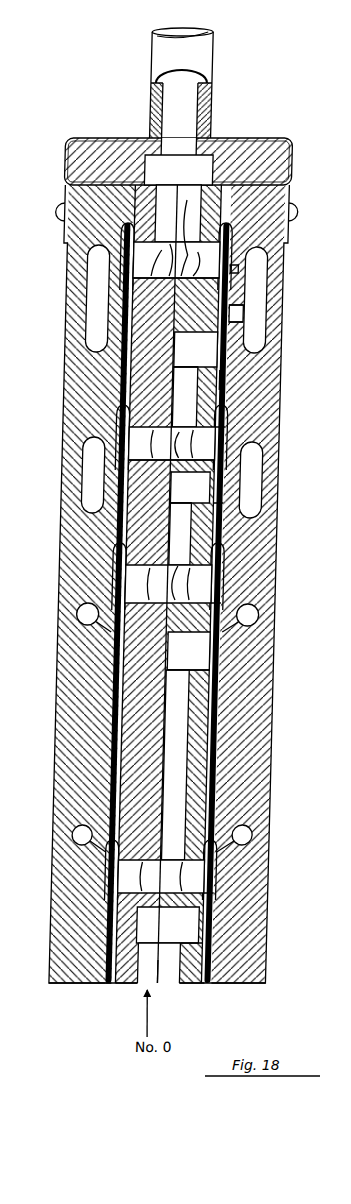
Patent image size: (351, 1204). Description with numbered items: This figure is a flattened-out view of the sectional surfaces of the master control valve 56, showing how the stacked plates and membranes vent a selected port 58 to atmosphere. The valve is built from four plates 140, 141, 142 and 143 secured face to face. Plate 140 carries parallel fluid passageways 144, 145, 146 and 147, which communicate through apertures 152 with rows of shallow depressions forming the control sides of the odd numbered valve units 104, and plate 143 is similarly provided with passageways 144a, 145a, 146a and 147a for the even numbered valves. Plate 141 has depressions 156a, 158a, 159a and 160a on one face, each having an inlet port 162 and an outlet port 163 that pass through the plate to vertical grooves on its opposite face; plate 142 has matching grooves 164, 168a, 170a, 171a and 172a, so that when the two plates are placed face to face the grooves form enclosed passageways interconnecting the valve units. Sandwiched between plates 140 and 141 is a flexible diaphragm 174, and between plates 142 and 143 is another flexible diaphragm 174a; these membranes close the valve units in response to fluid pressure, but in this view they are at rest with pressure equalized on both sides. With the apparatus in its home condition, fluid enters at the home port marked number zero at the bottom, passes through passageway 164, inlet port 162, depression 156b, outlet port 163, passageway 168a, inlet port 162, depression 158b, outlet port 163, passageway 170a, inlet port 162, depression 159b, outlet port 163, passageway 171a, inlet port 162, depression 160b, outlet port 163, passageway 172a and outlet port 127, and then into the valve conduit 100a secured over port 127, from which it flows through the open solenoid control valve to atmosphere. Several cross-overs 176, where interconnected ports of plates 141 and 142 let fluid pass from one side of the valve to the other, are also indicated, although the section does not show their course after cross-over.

The valve assembly 56 is at (124, 103).
The valve conduit 100a is at (202, 70).
The outlet port 127 is at (204, 178).
The valve unit 104 is at (246, 229).
The groove 172a is at (207, 262).
The inlet port 162 is at (216, 342).
The cross-over 176 is at (172, 265).
The fluid passageway 147 is at (96, 348).
The passageway 147a is at (267, 350).
The fluid passageway 146 is at (96, 502).
The passageway 146a is at (271, 508).
The fluid passageway 145 is at (93, 612).
The passageway 145a is at (272, 618).
The fluid passageway 144 is at (94, 838).
The passageway 144a is at (274, 837).
The outlet port 163 is at (215, 262).
The depression 160a is at (237, 279).
The depression 160b is at (230, 305).
The aperture 152 is at (248, 313).
The flexible diaphragm 174a is at (238, 378).
The groove 171a is at (198, 382).
The depression 159a is at (241, 428).
The depression 159b is at (226, 502).
The groove 170a is at (193, 535).
The depression 158a is at (240, 598).
The depression 158b is at (231, 648).
The groove 168a is at (198, 730).
The depression 156a is at (239, 895).
The depression 156b is at (234, 943).
The plate 140 is at (94, 965).
The flexible diaphragm 174 is at (132, 973).
The valve plate 141 is at (154, 973).
The port 58 is at (168, 980).
The fluid passageway 164 is at (196, 970).
The plate 142 is at (219, 973).
The plate 143 is at (272, 963).